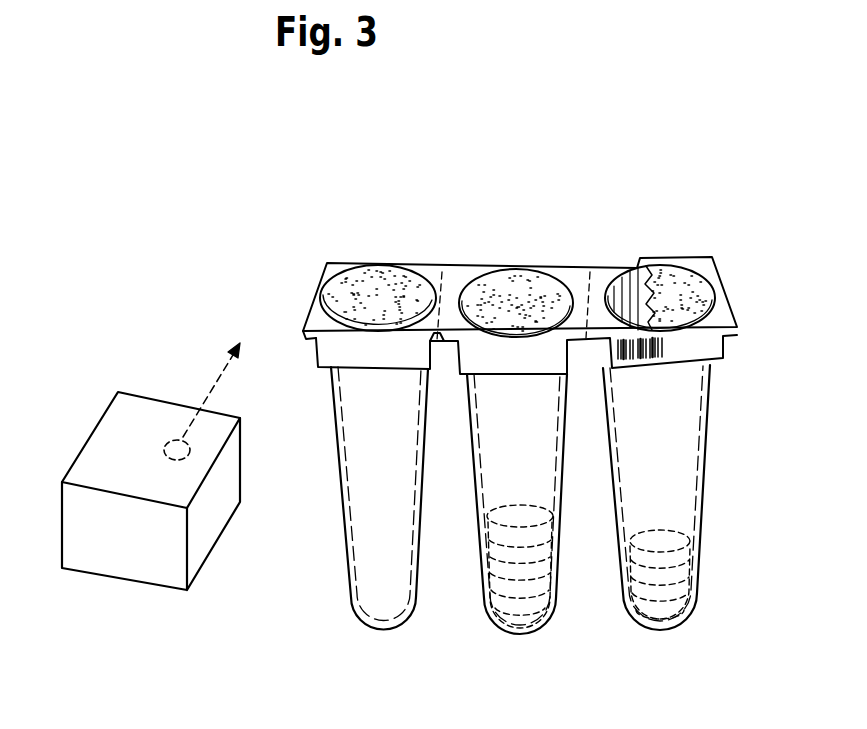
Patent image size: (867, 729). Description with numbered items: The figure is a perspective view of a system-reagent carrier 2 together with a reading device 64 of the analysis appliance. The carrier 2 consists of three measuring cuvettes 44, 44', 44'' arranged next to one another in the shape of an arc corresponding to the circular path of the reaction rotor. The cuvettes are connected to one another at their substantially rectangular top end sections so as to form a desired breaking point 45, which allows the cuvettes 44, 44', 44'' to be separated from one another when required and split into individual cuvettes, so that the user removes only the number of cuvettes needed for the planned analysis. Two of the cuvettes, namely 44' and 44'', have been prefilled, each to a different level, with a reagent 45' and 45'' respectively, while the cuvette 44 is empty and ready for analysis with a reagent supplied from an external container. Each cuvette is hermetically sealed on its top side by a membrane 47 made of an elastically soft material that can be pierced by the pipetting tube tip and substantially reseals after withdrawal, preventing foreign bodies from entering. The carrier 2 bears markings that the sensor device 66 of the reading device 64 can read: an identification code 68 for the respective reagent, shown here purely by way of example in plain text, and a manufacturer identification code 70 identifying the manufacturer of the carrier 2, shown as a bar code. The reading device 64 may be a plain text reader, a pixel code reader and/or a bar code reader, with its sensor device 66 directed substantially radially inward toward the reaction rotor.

The system-reagent carrier 2 is at (480, 246).
The measuring cuvette 44 is at (355, 527).
The measuring cuvette 44' is at (517, 540).
The measuring cuvette 44'' is at (683, 529).
The desired breaking point 45 is at (514, 226).
The reagent 45' is at (546, 566).
The reagent 45'' is at (713, 574).
The membrane 47 is at (378, 290).
The reading device 64 is at (120, 552).
The sensor device 66 is at (167, 443).
The identification code 68 is at (368, 363).
The manufacturer identification code 70 is at (642, 365).